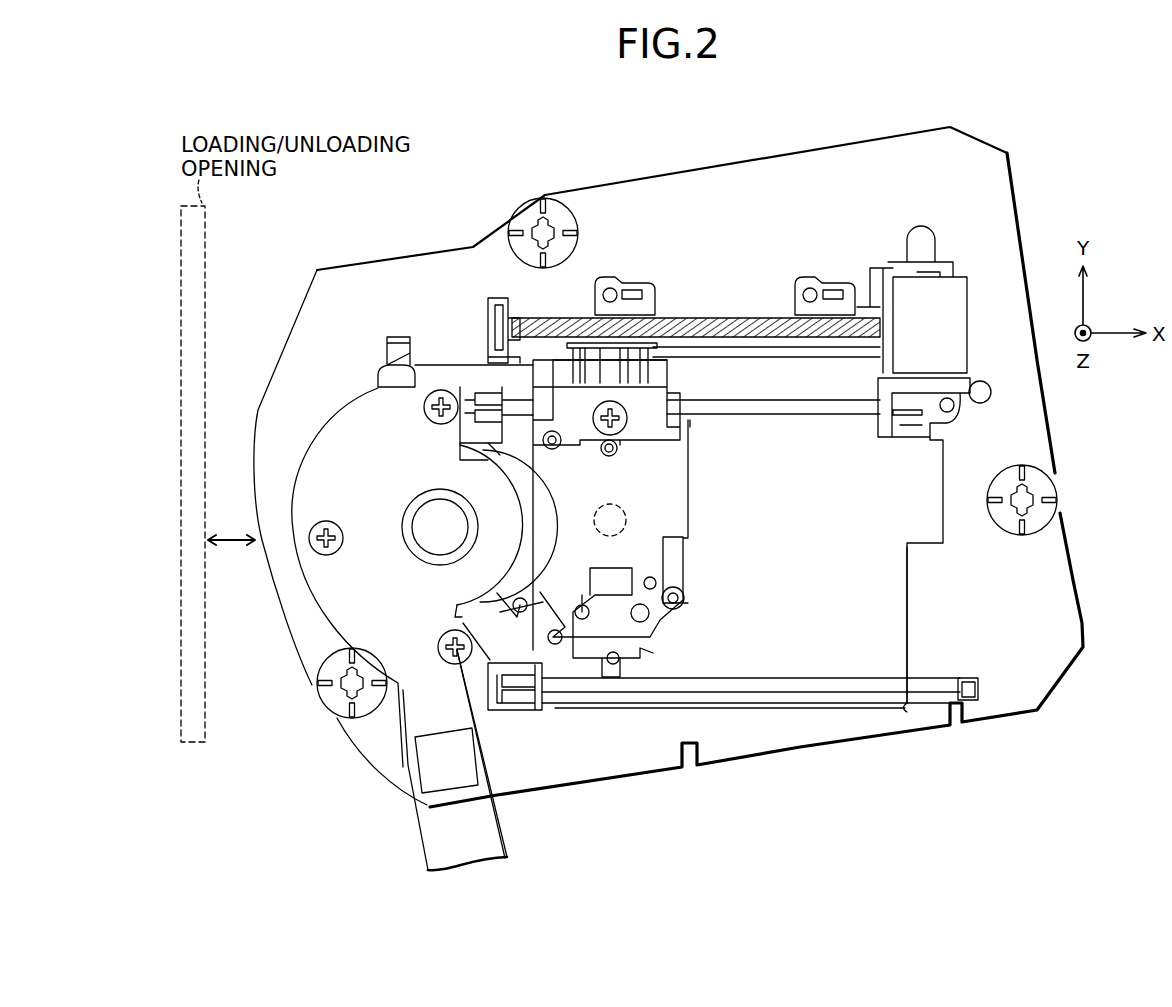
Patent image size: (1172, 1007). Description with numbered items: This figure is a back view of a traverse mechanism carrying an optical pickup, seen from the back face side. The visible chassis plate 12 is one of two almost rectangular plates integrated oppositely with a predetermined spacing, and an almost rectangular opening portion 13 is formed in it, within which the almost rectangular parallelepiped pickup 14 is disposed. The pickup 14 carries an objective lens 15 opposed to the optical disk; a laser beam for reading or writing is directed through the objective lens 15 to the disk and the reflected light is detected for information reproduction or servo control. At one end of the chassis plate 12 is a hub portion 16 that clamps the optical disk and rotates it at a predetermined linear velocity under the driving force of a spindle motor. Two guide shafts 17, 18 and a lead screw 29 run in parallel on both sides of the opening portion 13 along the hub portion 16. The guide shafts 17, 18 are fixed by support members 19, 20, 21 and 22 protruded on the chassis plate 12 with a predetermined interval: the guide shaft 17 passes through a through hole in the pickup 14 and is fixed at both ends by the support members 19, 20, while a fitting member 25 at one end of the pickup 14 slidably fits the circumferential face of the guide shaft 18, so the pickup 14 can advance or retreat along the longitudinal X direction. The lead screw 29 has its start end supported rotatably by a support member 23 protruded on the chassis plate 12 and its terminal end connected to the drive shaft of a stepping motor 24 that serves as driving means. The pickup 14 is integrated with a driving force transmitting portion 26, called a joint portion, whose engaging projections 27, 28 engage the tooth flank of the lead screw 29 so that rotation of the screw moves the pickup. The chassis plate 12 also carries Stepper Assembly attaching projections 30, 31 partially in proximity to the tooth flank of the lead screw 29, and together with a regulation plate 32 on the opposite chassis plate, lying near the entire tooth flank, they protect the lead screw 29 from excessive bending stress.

The chassis plate 12 is at (995, 190).
The opening portion 13 is at (903, 577).
The pickup 14 is at (690, 437).
The objective lens 15 is at (600, 508).
The hub portion 16 is at (438, 542).
The guide shaft 17 is at (815, 410).
The guide shaft 18 is at (810, 690).
The support member 19 is at (465, 420).
The support member 20 is at (905, 425).
The support member 21 is at (520, 705).
The support member 22 is at (968, 677).
The support member 23 is at (495, 315).
The stepping motor 24 is at (945, 318).
The fitting member 25 is at (633, 675).
The driving force transmitting portion 26 is at (665, 372).
The engaging projection 27 is at (600, 345).
The engaging projection 28 is at (620, 345).
The lead screw 29 is at (748, 322).
The Stepper Assembly attaching projection 30 is at (632, 283).
The Stepper Assembly attaching projection 31 is at (833, 283).
The regulation plate 32 is at (778, 352).